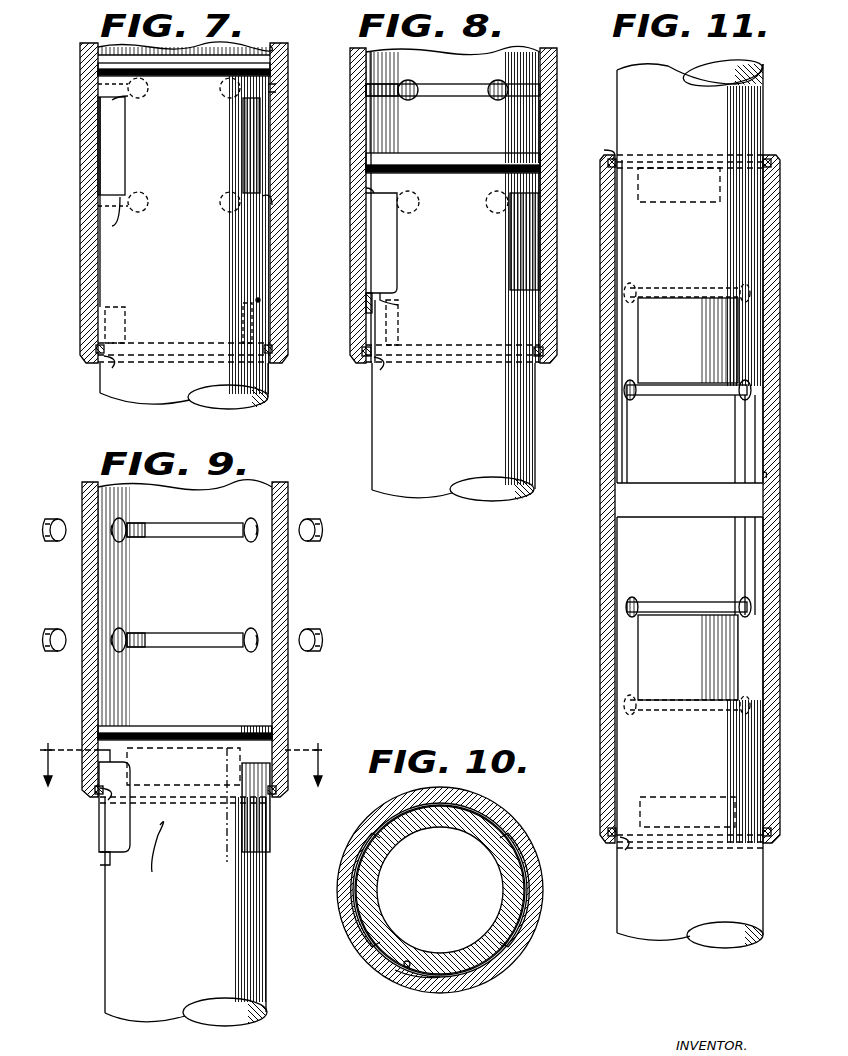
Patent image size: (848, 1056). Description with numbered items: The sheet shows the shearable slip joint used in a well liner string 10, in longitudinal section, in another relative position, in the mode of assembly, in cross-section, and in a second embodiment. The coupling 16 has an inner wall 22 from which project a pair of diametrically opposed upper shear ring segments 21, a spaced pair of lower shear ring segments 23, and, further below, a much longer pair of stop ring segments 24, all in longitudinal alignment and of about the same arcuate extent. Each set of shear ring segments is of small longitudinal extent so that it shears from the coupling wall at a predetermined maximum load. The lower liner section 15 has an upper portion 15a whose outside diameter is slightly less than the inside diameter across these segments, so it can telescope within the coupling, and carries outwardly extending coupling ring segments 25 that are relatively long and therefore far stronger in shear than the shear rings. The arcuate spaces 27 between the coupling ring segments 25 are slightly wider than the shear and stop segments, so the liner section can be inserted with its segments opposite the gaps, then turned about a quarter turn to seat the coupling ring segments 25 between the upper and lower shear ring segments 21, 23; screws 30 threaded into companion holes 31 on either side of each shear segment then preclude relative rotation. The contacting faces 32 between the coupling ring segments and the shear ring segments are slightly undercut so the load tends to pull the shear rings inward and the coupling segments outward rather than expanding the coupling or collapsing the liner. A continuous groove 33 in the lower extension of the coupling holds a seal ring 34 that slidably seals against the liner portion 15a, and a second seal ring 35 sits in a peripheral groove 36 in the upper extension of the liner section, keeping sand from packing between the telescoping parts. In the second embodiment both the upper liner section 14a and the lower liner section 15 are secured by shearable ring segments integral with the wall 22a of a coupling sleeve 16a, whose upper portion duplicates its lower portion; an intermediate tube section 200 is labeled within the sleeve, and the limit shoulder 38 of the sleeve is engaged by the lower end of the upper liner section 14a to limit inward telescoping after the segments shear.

In FIG. 9, the liner string 10 is at (181, 776).
In FIG. 11, the upper liner section 14a is at (757, 130).
In FIG. 7, the lower liner section 15 is at (120, 388).
In FIG. 8, the lower liner section 15 is at (395, 405).
In FIG. 9, the lower liner section 15 is at (118, 955).
In FIG. 10, the lower liner section 15 is at (367, 867).
In FIG. 11, the lower liner section 15 is at (763, 913).
In FIG. 8, the upper portion of the lower liner section 15a is at (535, 182).
In FIG. 7, the coupling 16 is at (86, 228).
In FIG. 8, the coupling 16 is at (350, 215).
In FIG. 9, the coupling 16 is at (86, 585).
In FIG. 10, the coupling 16 is at (528, 928).
In FIG. 11, the coupling sleeve 16a is at (598, 545).
In FIG. 7, the upper shear ring segments 21 is at (98, 90).
In FIG. 8, the upper shear ring segments 21 is at (545, 82).
In FIG. 9, the upper shear ring segments 21 is at (160, 528).
In FIG. 11, the upper shear ring segments 21 is at (676, 396).
In FIG. 7, the inner wall of the coupling 22 is at (100, 146).
In FIG. 8, the inner wall of the coupling 22 is at (542, 100).
In FIG. 10, the inner wall of the coupling 22 is at (407, 967).
In FIG. 11, the wall of the coupling sleeve 22a is at (622, 437).
In FIG. 7, the lower shear ring segments 23 is at (98, 203).
In FIG. 8, the lower shear ring segments 23 is at (452, 202).
In FIG. 9, the lower shear ring segments 23 is at (162, 648).
In FIG. 11, the lower shear ring segments 23 is at (686, 288).
In FIG. 7, the stop ring segments 24 is at (108, 326).
In FIG. 8, the stop ring segments 24 is at (368, 302).
In FIG. 7, the coupling ring segments 25 is at (115, 165).
In FIG. 8, the coupling ring segments 25 is at (385, 260).
In FIG. 9, the coupling ring segments 25 is at (110, 833).
In FIG. 10, the coupling ring segments 25 is at (512, 847).
In FIG. 11, the coupling ring segments 25 is at (690, 328).
In FIG. 8, the arcuate spaces between the coupling ring segments 27 is at (425, 240).
In FIG. 9, the arcuate spaces between the coupling ring segments 27 is at (152, 872).
In FIG. 10, the arcuate spaces between the coupling ring segments 27 is at (453, 972).
In FIG. 8, the screws 30 is at (488, 90).
In FIG. 9, the screws 30 is at (325, 522).
In FIG. 11, the screws 30 is at (624, 390).
In FIG. 9, the holes 31 is at (248, 522).
In FIG. 11, the holes 31 is at (745, 400).
In FIG. 7, the contacting faces 32 is at (128, 96).
In FIG. 8, the contacting faces 32 is at (370, 188).
In FIG. 9, the contacting faces 32 is at (148, 530).
In FIG. 7, the groove 33 is at (110, 358).
In FIG. 8, the groove 33 is at (377, 366).
In FIG. 9, the groove 33 is at (105, 798).
In FIG. 10, the groove 33 is at (476, 890).
In FIG. 11, the groove 33 is at (604, 150).
In FIG. 7, the seal ring 34 is at (282, 350).
In FIG. 8, the seal ring 34 is at (360, 348).
In FIG. 9, the seal ring 34 is at (185, 790).
In FIG. 11, the seal ring 34 is at (772, 163).
In FIG. 7, the seal ring 35 is at (272, 72).
In FIG. 9, the seal ring 35 is at (195, 725).
In FIG. 8, the peripheral groove 36 is at (446, 163).
In FIG. 11, the limit shoulder 38 is at (766, 478).
In FIG. 11, the intermediate tube section 200 is at (676, 518).